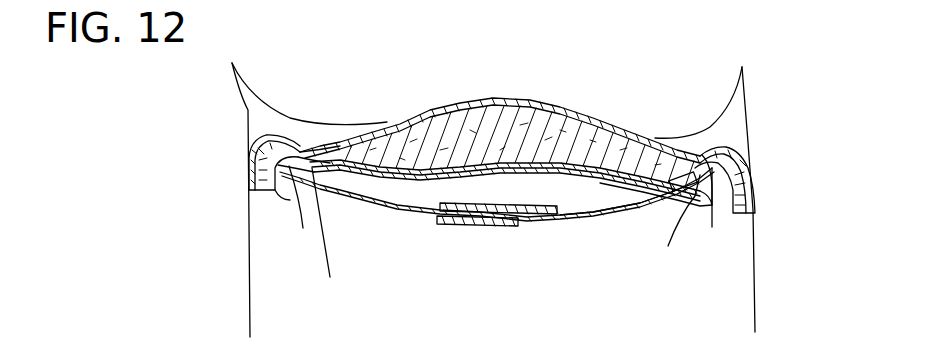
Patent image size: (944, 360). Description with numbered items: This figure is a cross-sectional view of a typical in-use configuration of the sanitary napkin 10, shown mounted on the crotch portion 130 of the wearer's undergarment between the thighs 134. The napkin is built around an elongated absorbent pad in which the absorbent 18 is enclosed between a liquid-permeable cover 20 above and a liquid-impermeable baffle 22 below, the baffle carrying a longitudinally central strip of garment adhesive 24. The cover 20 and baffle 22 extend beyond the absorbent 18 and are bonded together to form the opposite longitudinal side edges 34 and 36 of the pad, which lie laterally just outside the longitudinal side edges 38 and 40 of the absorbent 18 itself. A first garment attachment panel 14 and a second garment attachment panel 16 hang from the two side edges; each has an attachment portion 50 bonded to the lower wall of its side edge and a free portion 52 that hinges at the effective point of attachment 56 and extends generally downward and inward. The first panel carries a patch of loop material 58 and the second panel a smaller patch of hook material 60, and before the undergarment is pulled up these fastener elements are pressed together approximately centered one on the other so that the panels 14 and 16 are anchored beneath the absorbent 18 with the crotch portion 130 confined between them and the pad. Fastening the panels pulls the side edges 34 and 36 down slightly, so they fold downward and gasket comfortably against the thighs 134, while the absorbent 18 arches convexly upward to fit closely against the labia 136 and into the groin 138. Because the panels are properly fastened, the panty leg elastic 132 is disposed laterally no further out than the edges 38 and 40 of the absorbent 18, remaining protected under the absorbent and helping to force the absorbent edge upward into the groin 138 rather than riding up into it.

The sanitary napkin 10 is at (509, 168).
The first garment attachment panel 14 is at (367, 224).
The second garment attachment panel 16 is at (590, 236).
The absorbent 18 is at (423, 127).
The liquid-permeable cover 20 is at (397, 124).
The liquid-impermeable baffle 22 is at (577, 163).
The garment adhesive 24 is at (503, 160).
The first side edge 34 is at (240, 177).
The second side edge 36 is at (772, 188).
The longitudinal side edge of the absorbent 38 is at (318, 152).
The longitudinal side edge of the absorbent 40 is at (689, 160).
The attachment portion 50 is at (283, 187).
The free portion 52 is at (403, 210).
The effective point of attachment 56 is at (508, 209).
The patch of loop material 58 is at (437, 212).
The patch of hook material 60 is at (517, 220).
The panty crotch portion 130 is at (603, 180).
The panty leg elastic 132 is at (504, 238).
The thighs 134 is at (248, 280).
The labia 136 is at (451, 108).
The groin 138 is at (237, 82).